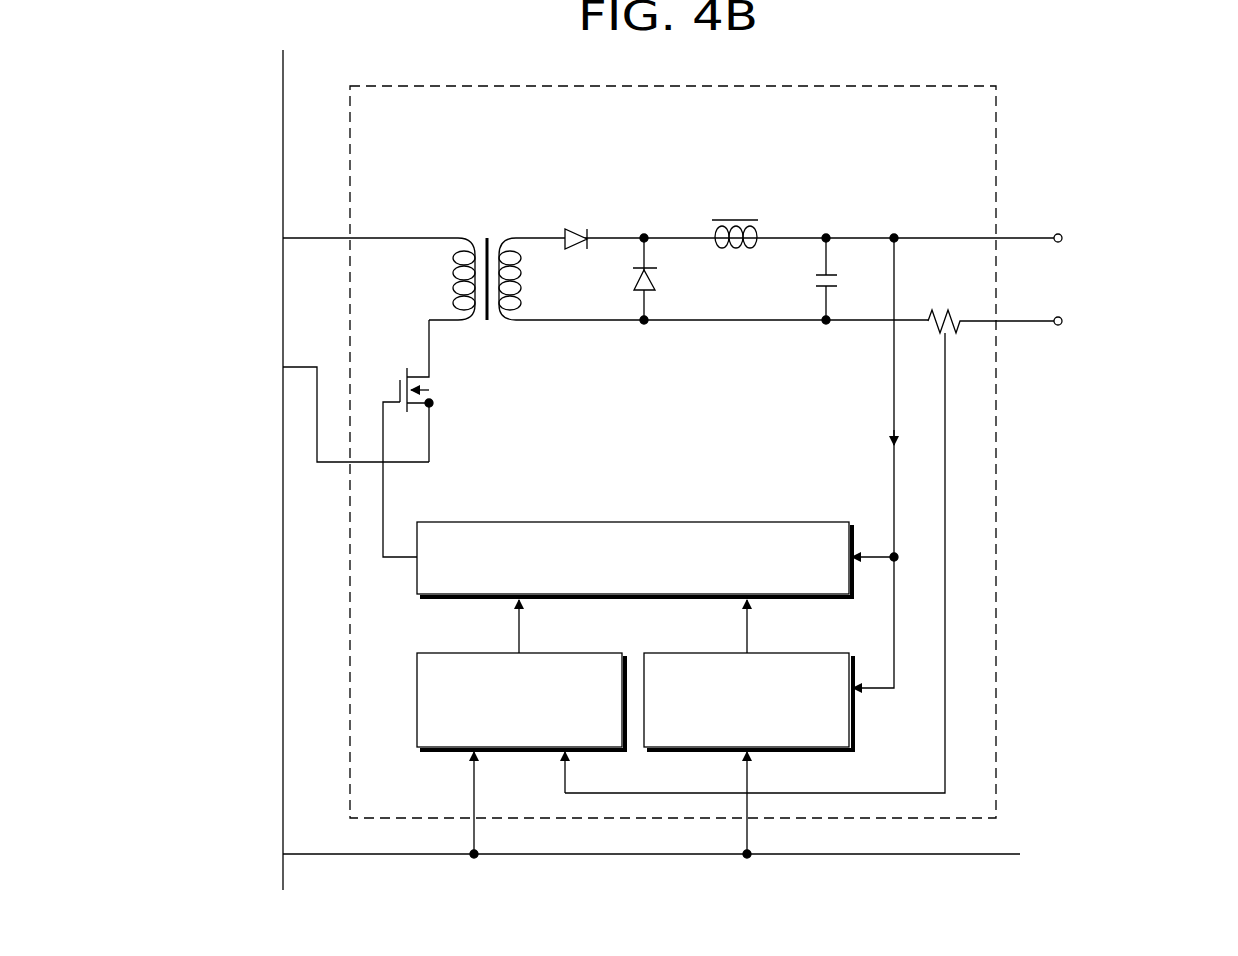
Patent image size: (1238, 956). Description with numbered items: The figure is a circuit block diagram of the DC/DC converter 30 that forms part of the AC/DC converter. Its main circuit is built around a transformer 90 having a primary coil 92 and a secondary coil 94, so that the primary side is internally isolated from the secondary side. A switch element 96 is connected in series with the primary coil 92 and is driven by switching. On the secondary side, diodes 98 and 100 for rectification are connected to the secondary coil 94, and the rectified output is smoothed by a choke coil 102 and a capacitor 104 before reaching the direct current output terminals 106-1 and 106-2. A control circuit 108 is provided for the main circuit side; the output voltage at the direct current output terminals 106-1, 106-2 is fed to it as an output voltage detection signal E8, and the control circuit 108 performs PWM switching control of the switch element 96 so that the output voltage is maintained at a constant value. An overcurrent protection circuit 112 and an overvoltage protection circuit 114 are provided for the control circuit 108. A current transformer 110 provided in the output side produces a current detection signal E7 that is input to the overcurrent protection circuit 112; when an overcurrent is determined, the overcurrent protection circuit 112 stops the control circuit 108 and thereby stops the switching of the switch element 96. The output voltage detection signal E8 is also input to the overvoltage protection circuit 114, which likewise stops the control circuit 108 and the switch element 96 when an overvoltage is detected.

The DC/DC converter 30 is at (817, 122).
The transformer 90 is at (517, 243).
The primary coil 92 is at (452, 283).
The secondary coil 94 is at (521, 285).
The switch element 96 is at (432, 390).
The diode 98 is at (572, 234).
The diode 100 is at (632, 293).
The choke coil 102 is at (731, 218).
The capacitor 104 is at (816, 280).
The direct current output terminal 106-1 is at (1056, 233).
The direct current output terminal 106-2 is at (1058, 326).
The control circuit 108 is at (629, 521).
The current transformer 110 is at (943, 308).
The overcurrent protection circuit 112 is at (461, 652).
The overvoltage protection circuit 114 is at (688, 652).
The current detection signal E7 is at (564, 783).
The output voltage detection signal E8 is at (894, 428).